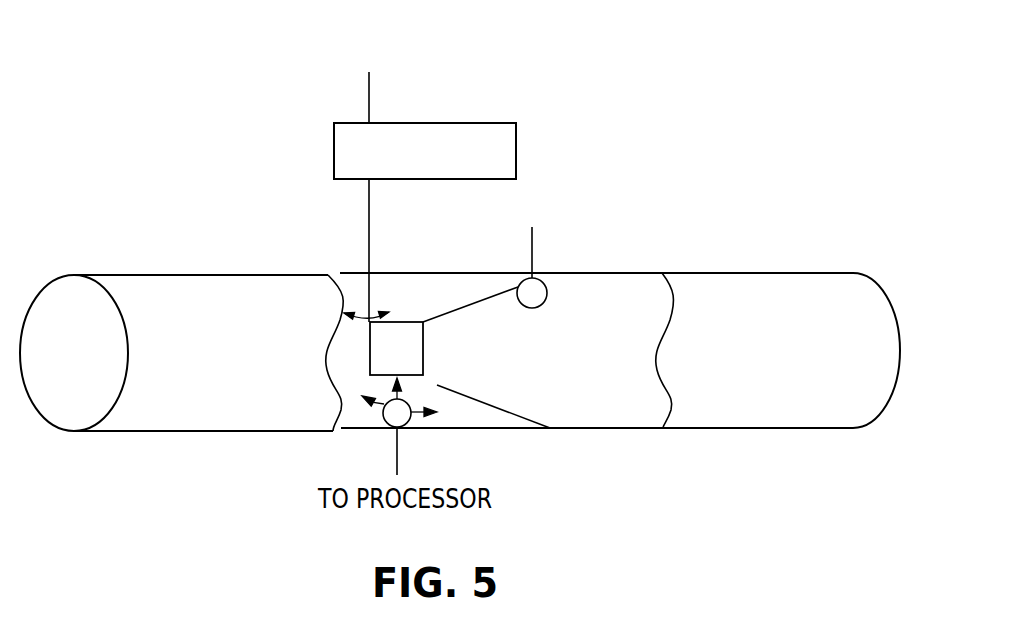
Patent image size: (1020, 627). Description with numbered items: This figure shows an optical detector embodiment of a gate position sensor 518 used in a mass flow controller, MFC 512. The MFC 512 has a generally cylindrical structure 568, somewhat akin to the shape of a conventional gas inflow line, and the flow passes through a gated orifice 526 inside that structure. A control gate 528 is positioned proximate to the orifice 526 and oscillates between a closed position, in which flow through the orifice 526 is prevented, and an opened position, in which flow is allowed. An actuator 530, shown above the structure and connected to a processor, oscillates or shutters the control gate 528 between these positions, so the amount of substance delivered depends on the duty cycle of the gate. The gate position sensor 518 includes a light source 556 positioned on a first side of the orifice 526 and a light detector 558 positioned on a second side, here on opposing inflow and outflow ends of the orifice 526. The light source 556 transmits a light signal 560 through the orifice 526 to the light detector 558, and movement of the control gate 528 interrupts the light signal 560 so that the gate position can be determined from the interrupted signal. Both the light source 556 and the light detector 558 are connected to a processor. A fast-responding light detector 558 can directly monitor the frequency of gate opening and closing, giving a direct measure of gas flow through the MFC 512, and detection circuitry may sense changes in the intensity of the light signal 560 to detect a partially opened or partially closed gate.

The MFC 512 is at (717, 163).
The gate position sensor 518 is at (336, 248).
The orifice 526 is at (492, 410).
The control gate 528 is at (370, 352).
The actuator 530 is at (462, 123).
The light source 556 is at (372, 422).
The light detector 558 is at (532, 293).
The light signal 560 is at (546, 320).
The generally cylindrical structure 568 is at (753, 367).